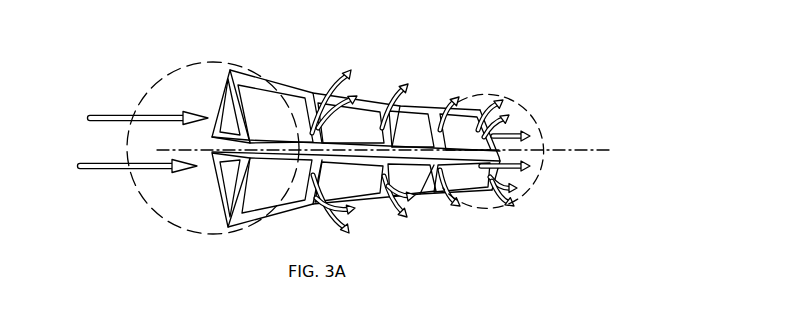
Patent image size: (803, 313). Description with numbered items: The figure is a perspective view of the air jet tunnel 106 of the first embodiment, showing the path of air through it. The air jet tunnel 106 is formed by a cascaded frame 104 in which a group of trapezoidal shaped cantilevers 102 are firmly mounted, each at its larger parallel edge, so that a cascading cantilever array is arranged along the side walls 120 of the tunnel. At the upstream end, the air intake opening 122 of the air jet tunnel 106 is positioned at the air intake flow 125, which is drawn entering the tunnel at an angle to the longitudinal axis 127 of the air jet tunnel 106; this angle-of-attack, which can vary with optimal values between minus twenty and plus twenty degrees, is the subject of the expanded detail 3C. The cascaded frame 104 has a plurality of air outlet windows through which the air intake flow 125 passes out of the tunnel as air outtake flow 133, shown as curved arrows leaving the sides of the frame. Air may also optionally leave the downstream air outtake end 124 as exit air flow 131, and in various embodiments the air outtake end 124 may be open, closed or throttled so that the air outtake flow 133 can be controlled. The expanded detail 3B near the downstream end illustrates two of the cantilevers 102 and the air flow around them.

The cantilever 102 is at (279, 108).
The cascaded frame 104 is at (432, 198).
The air jet tunnel 106 is at (416, 60).
The side walls 120 is at (213, 158).
The air intake opening 122 is at (213, 135).
The air outtake end 124 is at (522, 144).
The air intake flow 125 is at (128, 143).
The longitudinal axis 127 is at (400, 150).
The exit air flow 131 is at (525, 165).
The air outtake flow 133 is at (350, 237).
The detail 3B is at (523, 172).
The detail 3C is at (145, 203).